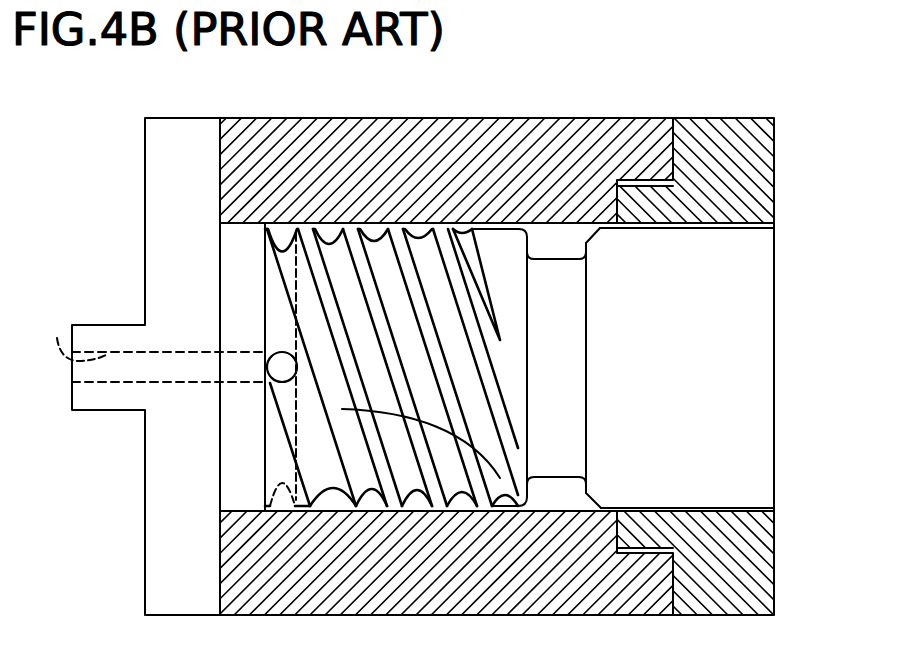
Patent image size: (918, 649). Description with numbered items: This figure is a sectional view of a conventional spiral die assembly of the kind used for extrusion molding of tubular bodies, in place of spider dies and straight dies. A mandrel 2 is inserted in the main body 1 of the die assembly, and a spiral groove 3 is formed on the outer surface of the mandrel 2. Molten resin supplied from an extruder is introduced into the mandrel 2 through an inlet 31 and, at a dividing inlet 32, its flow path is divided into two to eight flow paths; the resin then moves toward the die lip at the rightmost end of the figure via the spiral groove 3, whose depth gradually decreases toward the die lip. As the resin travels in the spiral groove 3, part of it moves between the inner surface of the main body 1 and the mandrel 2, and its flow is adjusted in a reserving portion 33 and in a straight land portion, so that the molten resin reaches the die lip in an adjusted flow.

The main body 1 is at (263, 133).
The mandrel 2 is at (753, 288).
The spiral groove 3 is at (308, 454).
The inlet 31 is at (152, 348).
The dividing inlet 32 is at (277, 358).
The reserving portion 33 is at (563, 237).